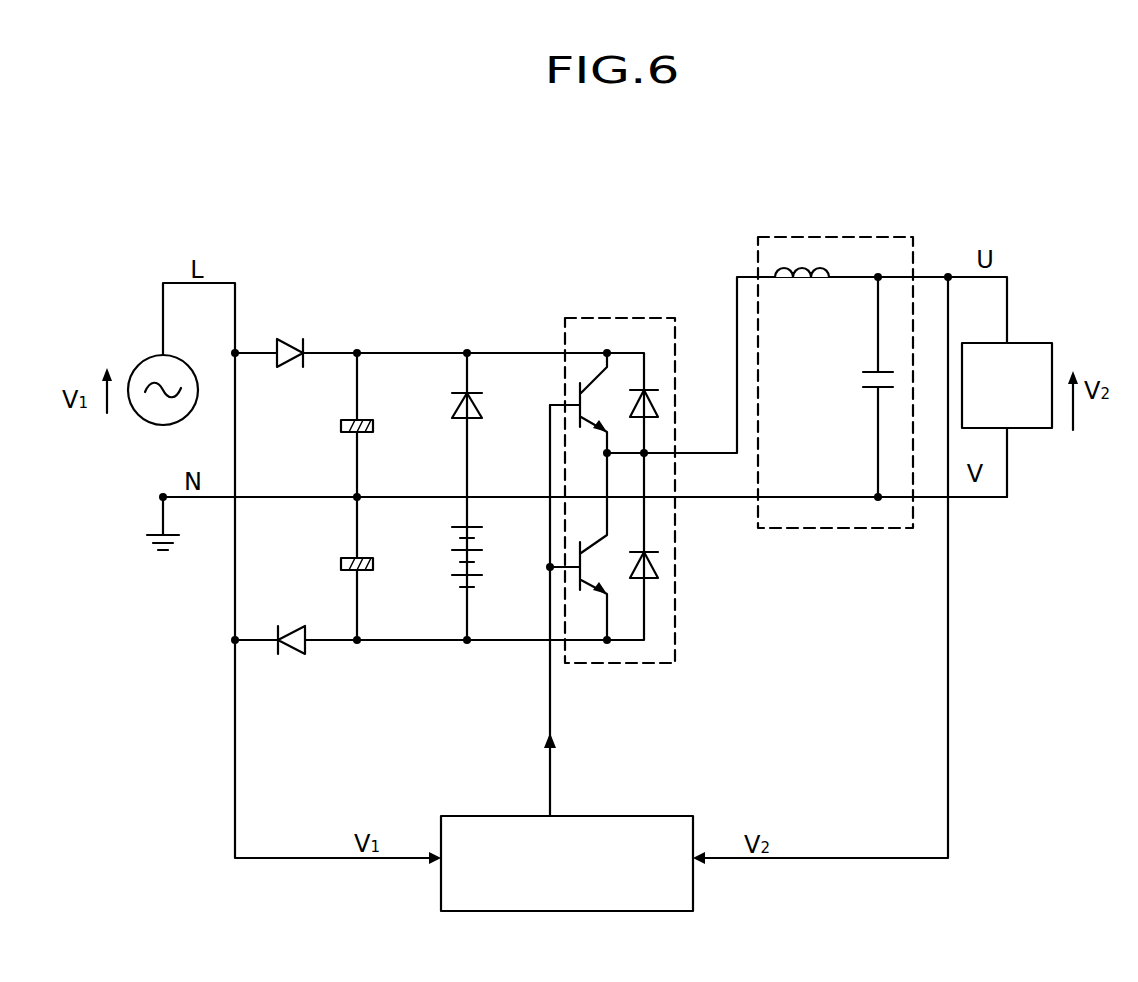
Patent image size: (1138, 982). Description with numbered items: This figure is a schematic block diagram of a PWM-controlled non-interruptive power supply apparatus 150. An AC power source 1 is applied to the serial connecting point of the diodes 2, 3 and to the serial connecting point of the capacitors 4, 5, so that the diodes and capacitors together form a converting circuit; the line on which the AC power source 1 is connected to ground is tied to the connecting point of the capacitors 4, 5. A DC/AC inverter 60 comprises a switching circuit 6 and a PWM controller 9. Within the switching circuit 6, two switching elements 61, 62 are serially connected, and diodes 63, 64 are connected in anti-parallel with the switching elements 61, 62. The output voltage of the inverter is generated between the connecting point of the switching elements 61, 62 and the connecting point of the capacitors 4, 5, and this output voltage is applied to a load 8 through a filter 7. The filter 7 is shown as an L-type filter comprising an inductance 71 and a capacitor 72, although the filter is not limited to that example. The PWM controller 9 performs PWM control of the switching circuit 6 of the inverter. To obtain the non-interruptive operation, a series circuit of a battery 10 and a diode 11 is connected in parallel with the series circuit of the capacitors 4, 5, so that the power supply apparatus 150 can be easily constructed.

The AC power source 1 is at (138, 368).
The diode 2 is at (294, 338).
The diode 3 is at (285, 627).
The capacitor 4 is at (381, 422).
The capacitor 5 is at (378, 571).
The switching circuit 6 is at (628, 318).
The filter 7 is at (835, 350).
The load 8 is at (1043, 343).
The PWM controller 9 is at (694, 836).
The battery 10 is at (483, 561).
The diode 11 is at (482, 411).
The DC/AC inverter 60 is at (707, 501).
The switching element 61 is at (577, 396).
The switching element 62 is at (575, 582).
The diode 63 is at (660, 409).
The diode 64 is at (660, 575).
The inductance 71 is at (797, 282).
The capacitor 72 is at (858, 380).
The non-interruptive power supply apparatus 150 is at (581, 232).